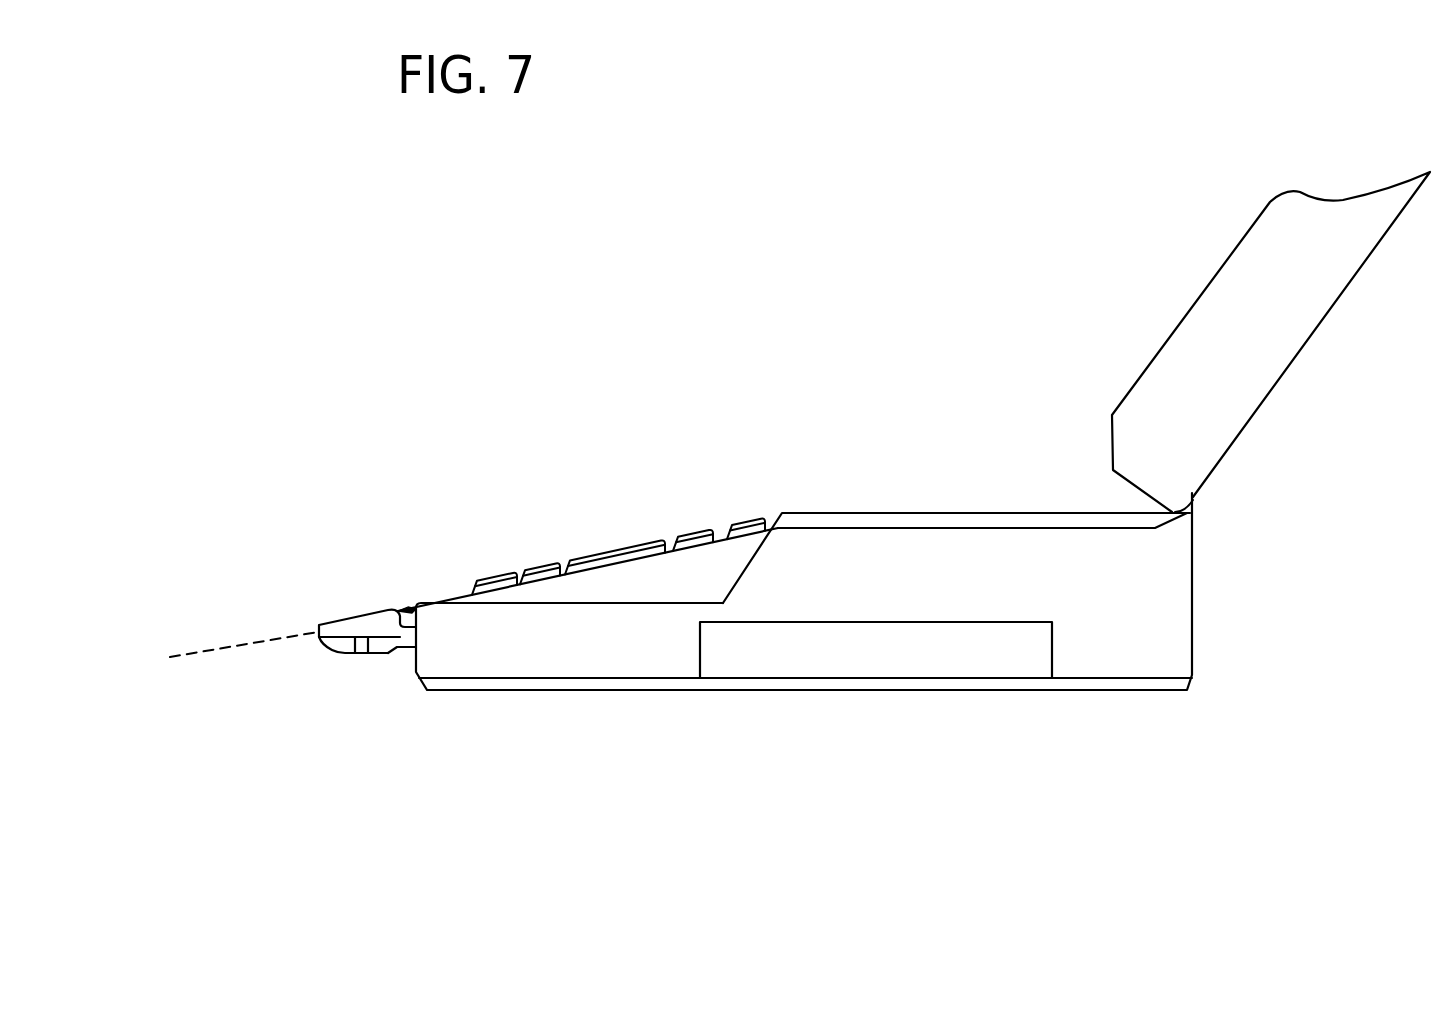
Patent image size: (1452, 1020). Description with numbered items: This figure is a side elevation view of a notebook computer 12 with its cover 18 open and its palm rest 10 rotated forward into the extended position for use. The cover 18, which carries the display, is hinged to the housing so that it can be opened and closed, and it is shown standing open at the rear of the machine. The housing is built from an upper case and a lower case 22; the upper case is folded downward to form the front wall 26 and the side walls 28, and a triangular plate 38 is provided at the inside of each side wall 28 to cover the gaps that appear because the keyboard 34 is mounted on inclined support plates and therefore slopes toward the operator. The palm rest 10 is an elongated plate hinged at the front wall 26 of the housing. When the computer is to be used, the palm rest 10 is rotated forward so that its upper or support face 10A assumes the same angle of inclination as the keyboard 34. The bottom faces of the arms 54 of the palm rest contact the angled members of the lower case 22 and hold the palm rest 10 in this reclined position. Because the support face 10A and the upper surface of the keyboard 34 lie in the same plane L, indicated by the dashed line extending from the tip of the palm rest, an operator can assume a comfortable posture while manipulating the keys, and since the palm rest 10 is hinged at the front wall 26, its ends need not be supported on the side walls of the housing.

The notebook computer 12 is at (927, 285).
The cover 18 is at (1298, 353).
The triangular plate 38 is at (725, 562).
The keyboard 34 is at (600, 548).
The front wall 26 is at (410, 610).
The support face 10A is at (357, 615).
The palm rest 10 is at (355, 655).
The arms 54 is at (405, 650).
The lower case 22 is at (510, 680).
The side walls 28 is at (663, 657).
The plane L is at (240, 640).